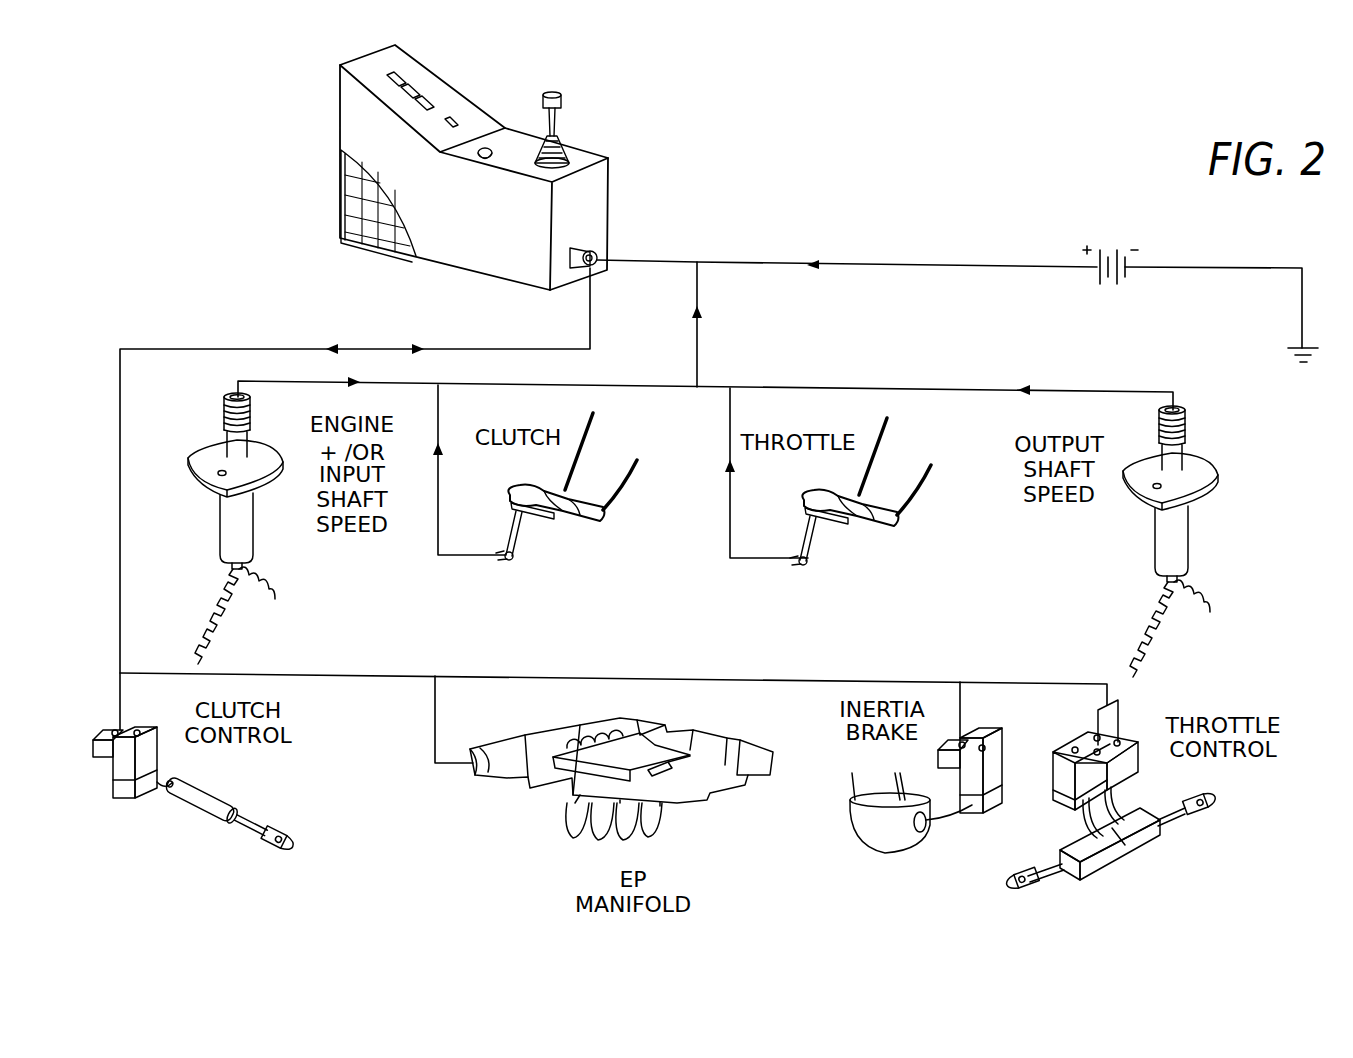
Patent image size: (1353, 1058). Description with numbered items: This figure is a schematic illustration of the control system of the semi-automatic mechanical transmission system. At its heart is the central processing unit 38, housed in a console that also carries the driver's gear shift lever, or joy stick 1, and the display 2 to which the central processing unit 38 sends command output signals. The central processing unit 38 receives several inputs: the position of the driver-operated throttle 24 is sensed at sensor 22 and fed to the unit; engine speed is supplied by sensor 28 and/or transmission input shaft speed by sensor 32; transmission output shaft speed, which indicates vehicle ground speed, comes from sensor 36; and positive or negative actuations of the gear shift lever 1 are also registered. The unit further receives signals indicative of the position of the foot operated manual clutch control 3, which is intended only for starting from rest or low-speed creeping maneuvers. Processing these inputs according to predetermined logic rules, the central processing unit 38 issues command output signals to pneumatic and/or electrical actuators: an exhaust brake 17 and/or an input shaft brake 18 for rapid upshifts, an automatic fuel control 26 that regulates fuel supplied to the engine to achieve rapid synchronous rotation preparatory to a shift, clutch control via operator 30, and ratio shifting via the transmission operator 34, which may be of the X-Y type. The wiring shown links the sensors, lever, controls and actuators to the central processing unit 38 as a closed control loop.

The gear shift lever 1 is at (560, 102).
The display 2 is at (477, 171).
The manual clutch control 3 is at (569, 566).
The exhaust brake 17 is at (988, 720).
The input shaft brake 18 is at (965, 747).
The sensor 22 is at (839, 556).
The throttle 24 is at (864, 514).
The automatic fuel control 26 is at (1180, 782).
The engine speed sensor 28 is at (217, 520).
The clutch operator 30 is at (247, 785).
The transmission input shaft speed sensor 32 is at (217, 520).
The transmission operator 34 is at (720, 726).
The transmission output shaft speed sensor 36 is at (1128, 562).
The central processing unit 38 is at (470, 233).